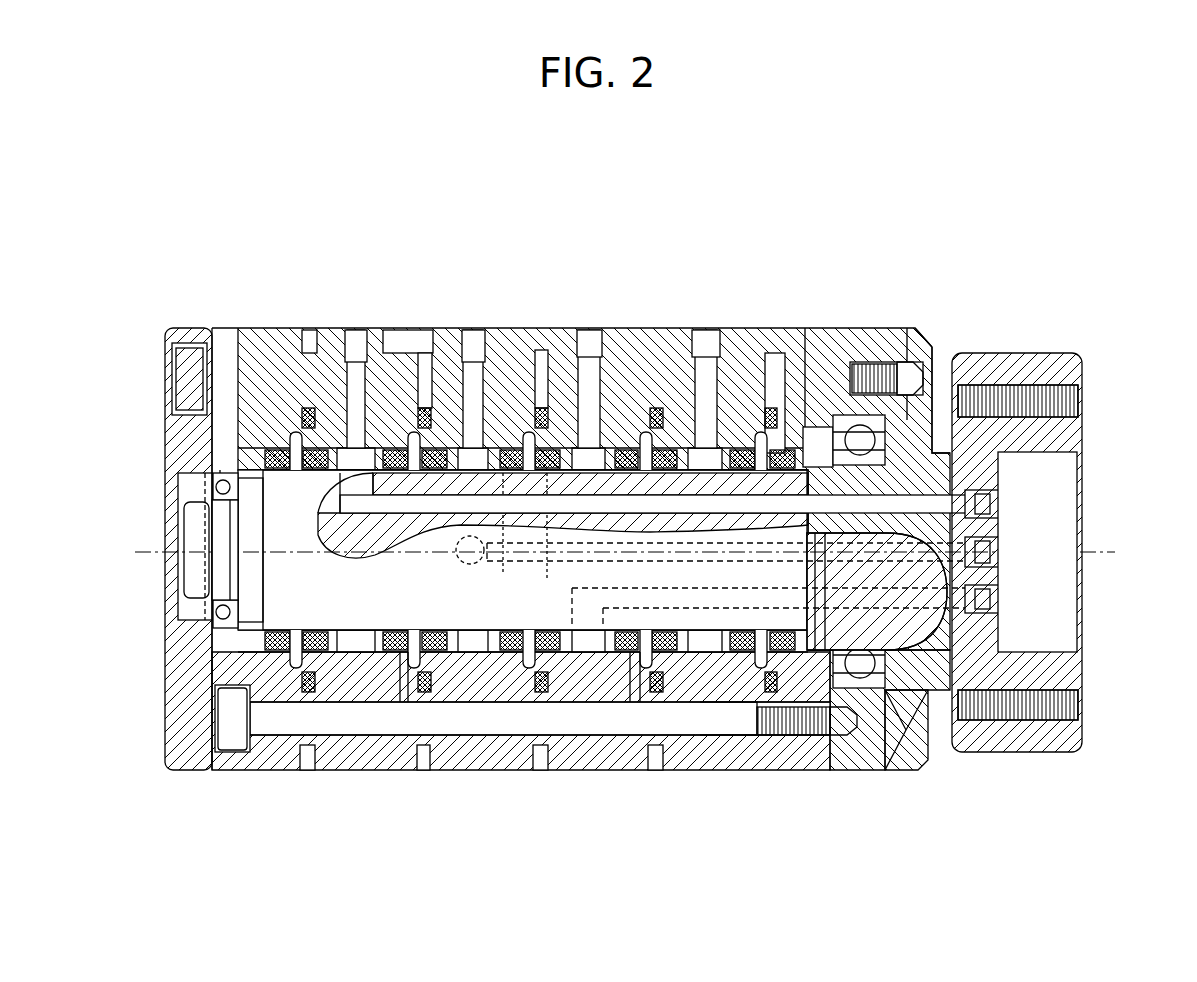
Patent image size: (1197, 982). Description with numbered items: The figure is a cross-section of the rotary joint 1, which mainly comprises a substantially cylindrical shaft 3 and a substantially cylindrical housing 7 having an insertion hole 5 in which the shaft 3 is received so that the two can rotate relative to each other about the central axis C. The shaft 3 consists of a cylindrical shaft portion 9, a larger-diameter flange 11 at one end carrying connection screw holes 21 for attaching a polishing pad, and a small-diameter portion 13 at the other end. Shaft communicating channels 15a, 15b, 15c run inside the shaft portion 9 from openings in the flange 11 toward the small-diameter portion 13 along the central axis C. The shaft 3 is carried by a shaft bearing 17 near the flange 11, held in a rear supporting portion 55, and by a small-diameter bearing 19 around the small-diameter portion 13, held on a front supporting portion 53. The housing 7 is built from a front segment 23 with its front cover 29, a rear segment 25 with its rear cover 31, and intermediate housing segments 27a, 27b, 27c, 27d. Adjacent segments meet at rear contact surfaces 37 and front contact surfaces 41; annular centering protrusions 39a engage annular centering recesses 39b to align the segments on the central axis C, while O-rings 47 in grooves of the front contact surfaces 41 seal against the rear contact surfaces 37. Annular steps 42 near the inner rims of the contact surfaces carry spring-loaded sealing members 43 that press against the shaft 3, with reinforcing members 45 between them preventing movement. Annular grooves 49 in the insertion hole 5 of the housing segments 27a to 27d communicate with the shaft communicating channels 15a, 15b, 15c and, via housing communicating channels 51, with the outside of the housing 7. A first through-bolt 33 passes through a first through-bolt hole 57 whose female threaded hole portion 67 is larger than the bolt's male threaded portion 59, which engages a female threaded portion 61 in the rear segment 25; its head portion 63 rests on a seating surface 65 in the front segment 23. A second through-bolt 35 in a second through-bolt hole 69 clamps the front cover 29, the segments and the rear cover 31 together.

The rotary joint 1 is at (1035, 215).
The shaft 3 is at (1098, 302).
The insertion hole 5 is at (330, 630).
The housing 7 is at (925, 185).
The shaft portion 9 is at (215, 577).
The flange 11 is at (1058, 353).
The small-diameter portion 13 is at (190, 518).
The shaft communicating channel 15a is at (998, 505).
The shaft communicating channel 15b is at (998, 560).
The shaft communicating channel 15c is at (998, 605).
The shaft bearing 17 is at (843, 328).
The small-diameter bearing 19 is at (215, 486).
The connection screw holes 21 is at (1082, 395).
The front segment 23 is at (273, 328).
The rear segment 25 is at (805, 328).
The housing segment 27a is at (407, 328).
The housing segment 27b is at (522, 328).
The housing segment 27c is at (560, 328).
The housing segment 27d is at (762, 328).
The front cover 29 is at (188, 328).
The rear cover 31 is at (893, 328).
The first through-bolt 33 is at (198, 716).
The second through-bolt 35 is at (172, 383).
The rear contact surfaces 37 is at (705, 328).
The centering protrusions 39a is at (682, 328).
The centering recesses 39b is at (657, 328).
The front contact surfaces 41 is at (620, 330).
The annular steps 42 is at (504, 560).
The sealing members 43 is at (387, 630).
The reinforcing members 45 is at (404, 700).
The O-rings 47 is at (636, 700).
The annular grooves 49 is at (383, 328).
The housing communicating channels 51 is at (360, 328).
The front supporting portion 53 is at (220, 615).
The rear supporting portion 55 is at (890, 660).
The first through-bolt hole 57 is at (845, 808).
The male threaded portion 59 is at (885, 745).
The female threaded portion 61 is at (838, 735).
The head portion 63 is at (215, 728).
The seating surface 65 is at (235, 750).
The female threaded hole portion 67 is at (710, 735).
The second through-bolt hole 69 is at (908, 330).
The central axis C is at (1100, 552).